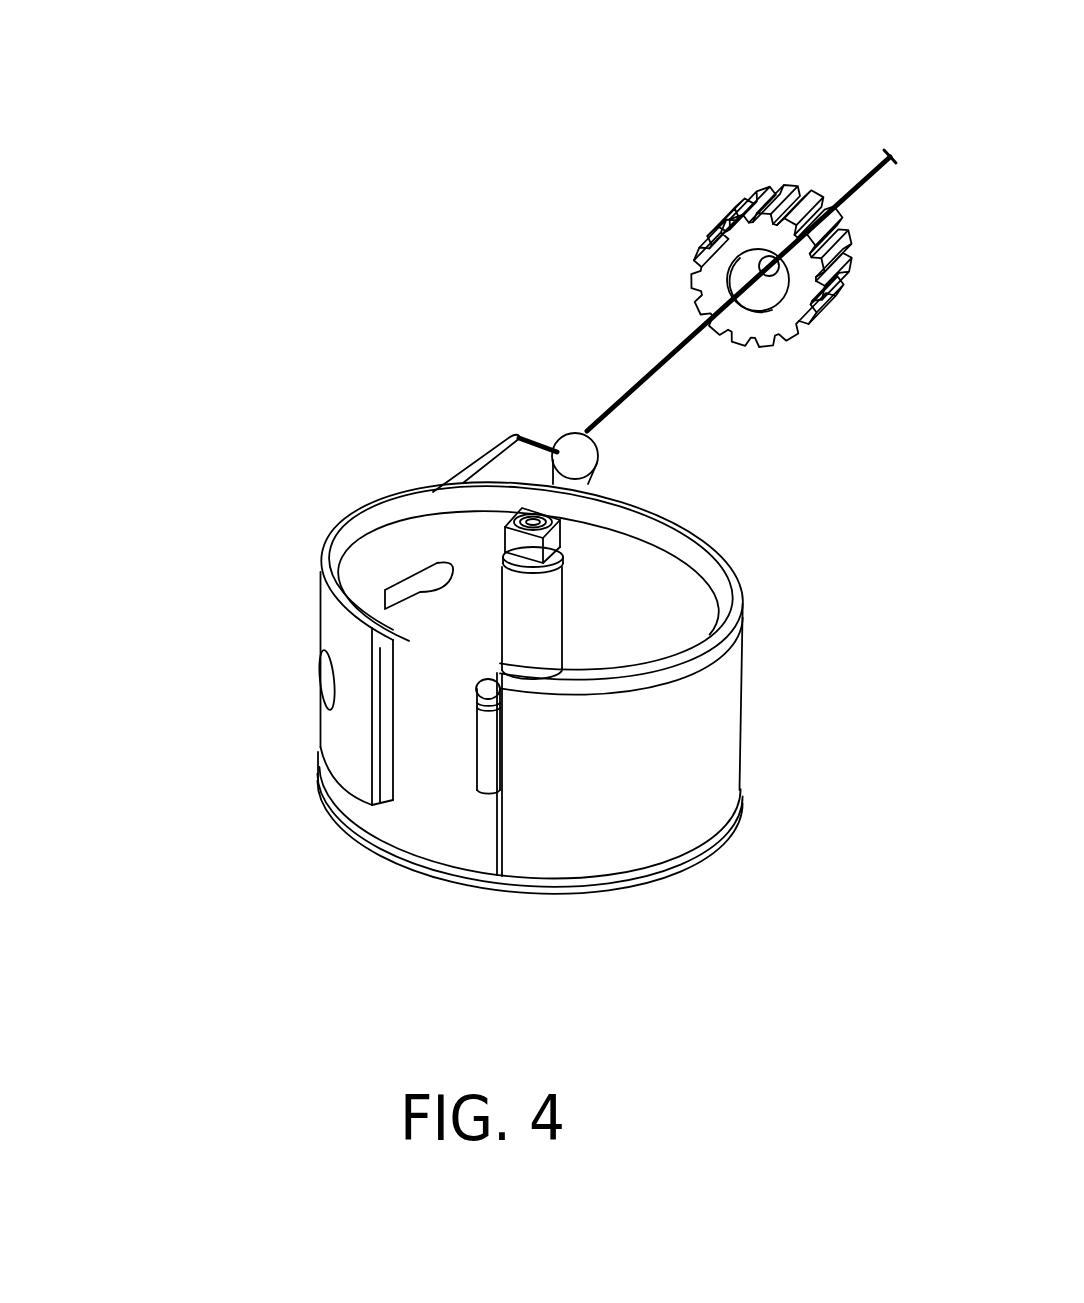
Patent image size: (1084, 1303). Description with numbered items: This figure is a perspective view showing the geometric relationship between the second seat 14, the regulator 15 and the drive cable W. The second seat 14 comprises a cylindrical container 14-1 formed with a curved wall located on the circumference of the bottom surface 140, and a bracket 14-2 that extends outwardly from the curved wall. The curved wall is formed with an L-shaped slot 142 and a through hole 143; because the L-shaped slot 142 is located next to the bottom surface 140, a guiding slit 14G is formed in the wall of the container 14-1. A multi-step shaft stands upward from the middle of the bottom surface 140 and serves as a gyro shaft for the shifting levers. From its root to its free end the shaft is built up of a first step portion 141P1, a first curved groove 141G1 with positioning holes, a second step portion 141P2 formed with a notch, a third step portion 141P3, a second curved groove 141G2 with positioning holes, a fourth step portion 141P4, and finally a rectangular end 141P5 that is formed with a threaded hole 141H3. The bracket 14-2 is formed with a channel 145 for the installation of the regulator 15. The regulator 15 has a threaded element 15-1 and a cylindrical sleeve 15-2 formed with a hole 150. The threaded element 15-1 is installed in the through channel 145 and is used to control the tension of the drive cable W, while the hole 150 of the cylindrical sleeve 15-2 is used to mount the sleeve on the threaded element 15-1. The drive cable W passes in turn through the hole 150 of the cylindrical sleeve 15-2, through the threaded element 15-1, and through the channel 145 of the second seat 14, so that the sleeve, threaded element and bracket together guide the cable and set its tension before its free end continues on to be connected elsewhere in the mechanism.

The second seat 14 is at (740, 777).
The cylindrical container 14-1 is at (717, 745).
The bracket 14-2 is at (490, 443).
The guiding slit 14G is at (320, 767).
The bottom surface 140 is at (427, 833).
The L-shaped slot 142 is at (493, 857).
The through hole 143 is at (318, 693).
The channel 145 is at (423, 570).
The first step portion 141P1 is at (483, 747).
The second step portion 141P2 is at (488, 685).
The first curved groove 141G1 is at (480, 700).
The third step portion 141P3 is at (550, 598).
The fourth step portion 141P4 is at (563, 560).
The second curved groove 141G2 is at (563, 573).
The rectangular end 141P5 is at (556, 530).
The threaded hole 141H3 is at (565, 518).
The regulator 15 is at (410, 62).
The threaded element 15-1 is at (557, 428).
The cylindrical sleeve 15-2 is at (740, 195).
The hole 150 is at (733, 248).
The drive cable W is at (435, 572).